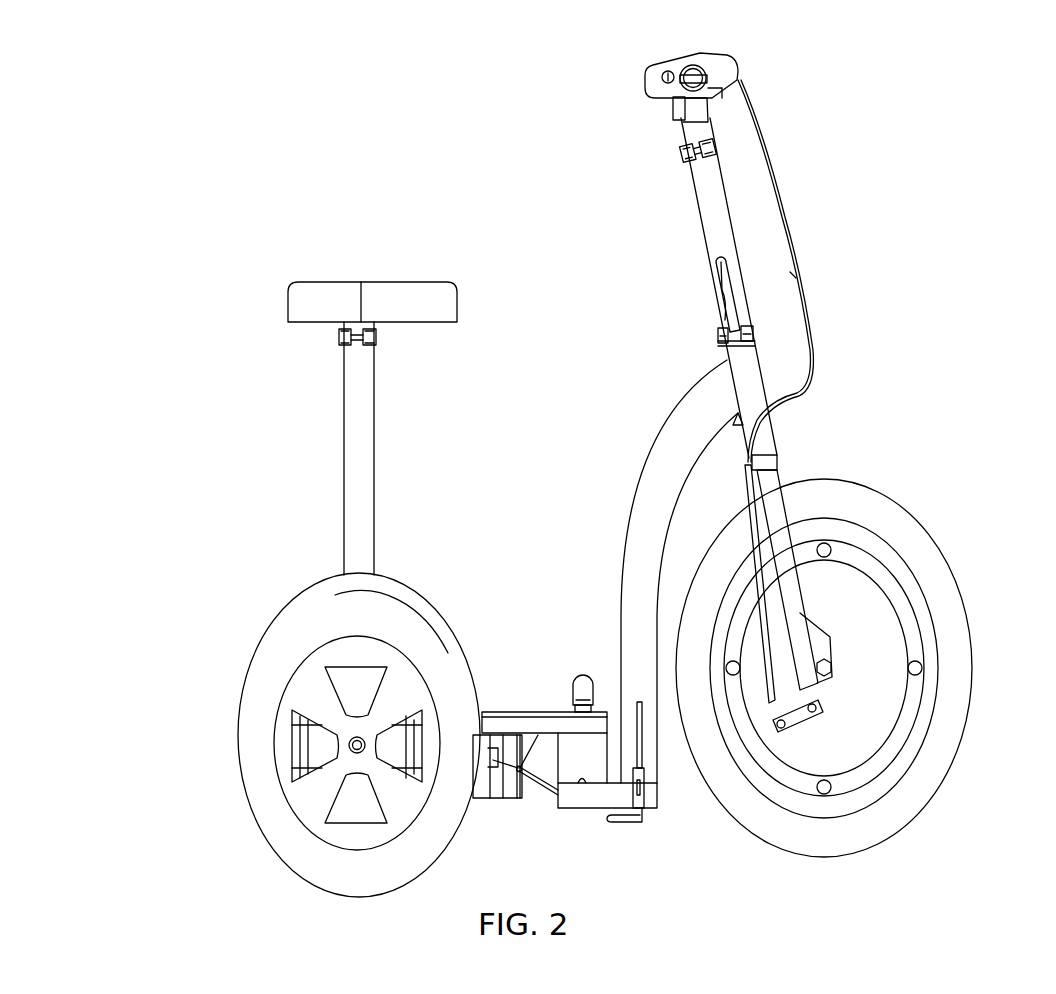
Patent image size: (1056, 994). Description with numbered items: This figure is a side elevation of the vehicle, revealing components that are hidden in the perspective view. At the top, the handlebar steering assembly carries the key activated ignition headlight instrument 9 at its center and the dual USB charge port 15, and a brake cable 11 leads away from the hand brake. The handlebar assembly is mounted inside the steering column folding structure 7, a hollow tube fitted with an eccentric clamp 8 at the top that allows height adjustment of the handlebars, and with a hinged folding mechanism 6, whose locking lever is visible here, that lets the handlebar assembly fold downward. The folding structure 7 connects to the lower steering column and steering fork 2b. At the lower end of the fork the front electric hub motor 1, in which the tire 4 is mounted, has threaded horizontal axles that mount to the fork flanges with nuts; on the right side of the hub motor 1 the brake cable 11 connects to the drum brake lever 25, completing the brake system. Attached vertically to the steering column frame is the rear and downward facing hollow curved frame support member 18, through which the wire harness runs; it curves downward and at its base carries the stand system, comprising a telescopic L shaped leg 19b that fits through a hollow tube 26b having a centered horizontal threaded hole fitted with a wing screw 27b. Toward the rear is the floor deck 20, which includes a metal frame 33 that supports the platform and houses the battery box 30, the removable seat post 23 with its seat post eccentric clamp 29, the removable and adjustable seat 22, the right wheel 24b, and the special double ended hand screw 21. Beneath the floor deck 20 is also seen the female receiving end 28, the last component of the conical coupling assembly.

The front electric hub motor 1 is at (892, 602).
The steering fork 2b is at (798, 577).
The tire 4 is at (842, 482).
The hinged folding mechanism 6 is at (722, 338).
The steering column folding structure 7 is at (695, 215).
The eccentric clamp 8 is at (683, 165).
The key activated ignition headlight instrument 9 is at (718, 53).
The brake cable 11 is at (770, 170).
The dual USB charge port 15 is at (670, 122).
The curved frame support member 18 is at (676, 425).
The telescopic L shaped leg 19b is at (642, 722).
The floor deck 20 is at (515, 705).
The special double ended hand screw 21 is at (575, 672).
The seat 22 is at (298, 325).
The seat post 23 is at (375, 478).
The right wheel 24b is at (258, 835).
The drum brake lever 25 is at (803, 723).
The hollow tube 26b is at (647, 800).
The wing screw 27b is at (633, 795).
The female receiving end 28 is at (555, 772).
The seat post eccentric clamp 29 is at (378, 347).
The battery box 30 is at (480, 778).
The metal frame 33 is at (517, 787).